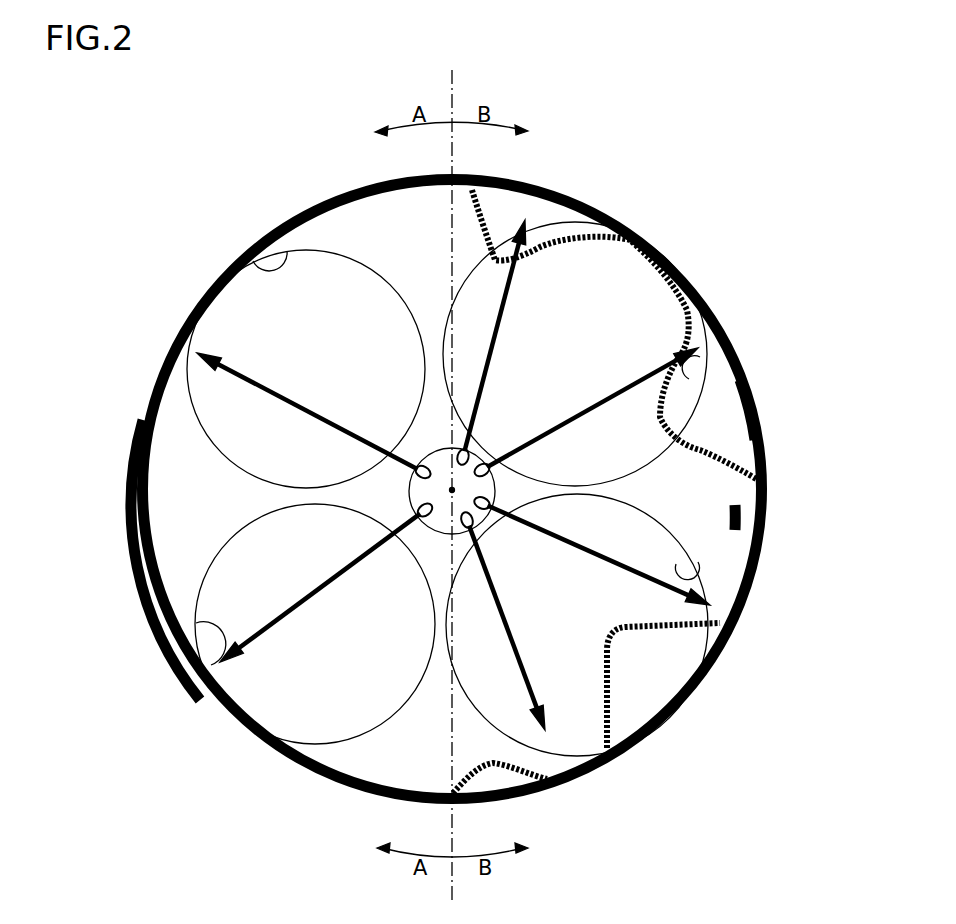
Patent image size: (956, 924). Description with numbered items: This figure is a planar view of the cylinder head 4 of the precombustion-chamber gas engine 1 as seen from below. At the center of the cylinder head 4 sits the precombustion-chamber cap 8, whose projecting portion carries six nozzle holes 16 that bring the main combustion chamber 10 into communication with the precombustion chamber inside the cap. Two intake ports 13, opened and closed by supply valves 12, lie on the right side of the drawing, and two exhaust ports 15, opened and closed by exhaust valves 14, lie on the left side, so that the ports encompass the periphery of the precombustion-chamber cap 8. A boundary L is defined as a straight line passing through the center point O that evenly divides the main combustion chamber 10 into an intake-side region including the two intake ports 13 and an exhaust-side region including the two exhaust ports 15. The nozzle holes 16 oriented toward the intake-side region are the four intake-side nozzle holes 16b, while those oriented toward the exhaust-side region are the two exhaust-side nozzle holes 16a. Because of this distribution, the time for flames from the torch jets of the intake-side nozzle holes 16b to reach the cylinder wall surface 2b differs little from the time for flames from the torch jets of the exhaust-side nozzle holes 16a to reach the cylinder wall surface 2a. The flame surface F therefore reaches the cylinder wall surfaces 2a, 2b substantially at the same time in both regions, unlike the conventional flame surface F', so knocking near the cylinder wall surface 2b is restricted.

The precombustion-chamber gas engine 1 is at (248, 152).
The cylinder wall surface of the exhaust-side region 2a is at (170, 575).
The cylinder wall surface of the intake-side region 2b is at (742, 408).
The cylinder head 4 is at (737, 518).
The precombustion-chamber cap 8 is at (478, 450).
The main combustion chamber 10 is at (410, 247).
The supply valve 12 is at (638, 320).
The intake port 13 is at (700, 357).
The exhaust valve 14 is at (227, 333).
The exhaust port 15 is at (260, 268).
The nozzle hole 16 is at (431, 527).
The exhaust-side nozzle hole 16a is at (416, 478).
The intake-side nozzle hole 16b is at (489, 509).
The flame surface F is at (586, 472).
The conventional flame surface F' is at (617, 317).
The center point o is at (451, 494).
The boundary L is at (453, 888).